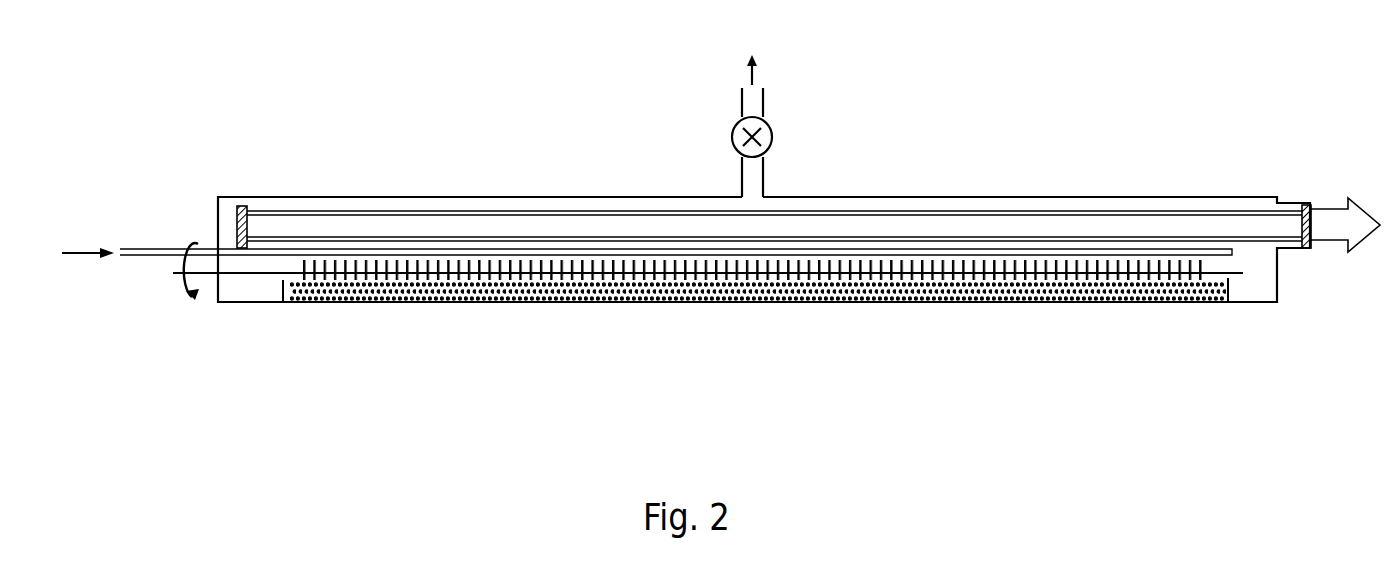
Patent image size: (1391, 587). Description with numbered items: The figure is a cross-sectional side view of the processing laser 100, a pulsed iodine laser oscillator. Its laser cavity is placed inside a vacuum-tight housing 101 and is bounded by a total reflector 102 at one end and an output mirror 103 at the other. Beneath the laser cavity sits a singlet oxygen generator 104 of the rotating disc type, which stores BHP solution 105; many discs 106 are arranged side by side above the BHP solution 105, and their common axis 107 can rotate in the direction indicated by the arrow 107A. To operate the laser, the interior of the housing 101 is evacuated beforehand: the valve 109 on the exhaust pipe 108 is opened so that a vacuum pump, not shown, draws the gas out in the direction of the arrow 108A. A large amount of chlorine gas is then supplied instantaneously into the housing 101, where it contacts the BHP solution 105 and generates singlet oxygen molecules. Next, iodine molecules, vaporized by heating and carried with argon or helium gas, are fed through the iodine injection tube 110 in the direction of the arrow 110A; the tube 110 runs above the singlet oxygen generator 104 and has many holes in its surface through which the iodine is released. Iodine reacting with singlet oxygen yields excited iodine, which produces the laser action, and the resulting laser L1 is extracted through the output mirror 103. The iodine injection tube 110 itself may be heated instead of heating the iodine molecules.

The processing laser 100 is at (197, 53).
The housing 101 is at (470, 197).
The total reflector 102 is at (243, 206).
The output mirror 103 is at (1303, 204).
The laser L1 is at (1330, 220).
The singlet oxygen generator 104 is at (652, 305).
The BHP solution 105 is at (740, 292).
The discs 106 is at (297, 308).
The common axis 107 is at (248, 280).
The arrow 107A is at (188, 241).
The exhaust pipe 108 is at (766, 175).
The arrow 108A is at (757, 74).
The valve 109 is at (773, 131).
The iodine injection tube 110 is at (148, 260).
The arrow 110A is at (81, 250).